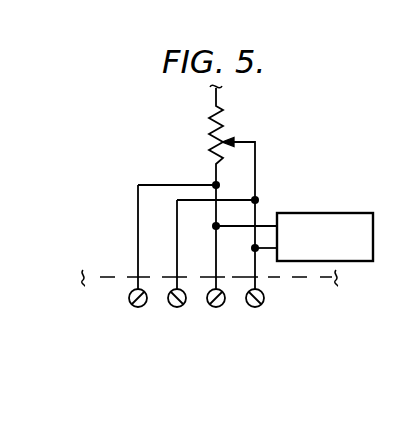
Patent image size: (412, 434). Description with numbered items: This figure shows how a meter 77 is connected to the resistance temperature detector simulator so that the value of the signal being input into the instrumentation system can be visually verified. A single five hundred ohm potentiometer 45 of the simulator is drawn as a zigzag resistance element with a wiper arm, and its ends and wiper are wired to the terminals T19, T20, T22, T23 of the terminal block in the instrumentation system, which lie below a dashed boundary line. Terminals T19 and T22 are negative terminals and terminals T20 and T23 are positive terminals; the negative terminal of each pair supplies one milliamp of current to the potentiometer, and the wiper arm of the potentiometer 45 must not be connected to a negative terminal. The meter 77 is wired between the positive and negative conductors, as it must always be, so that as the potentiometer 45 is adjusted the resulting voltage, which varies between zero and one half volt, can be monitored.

The potentiometer 45 is at (222, 117).
The meter 77 is at (312, 218).
The terminal T19 is at (136, 324).
The terminal T20 is at (176, 324).
The terminal T22 is at (215, 324).
The terminal T23 is at (255, 324).